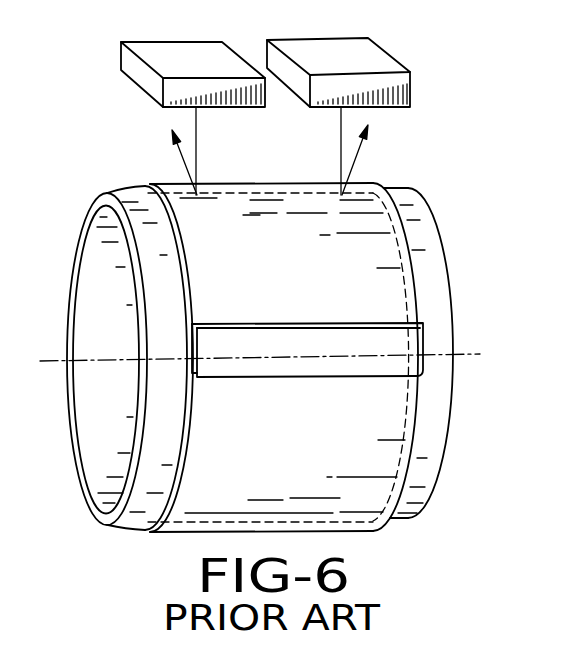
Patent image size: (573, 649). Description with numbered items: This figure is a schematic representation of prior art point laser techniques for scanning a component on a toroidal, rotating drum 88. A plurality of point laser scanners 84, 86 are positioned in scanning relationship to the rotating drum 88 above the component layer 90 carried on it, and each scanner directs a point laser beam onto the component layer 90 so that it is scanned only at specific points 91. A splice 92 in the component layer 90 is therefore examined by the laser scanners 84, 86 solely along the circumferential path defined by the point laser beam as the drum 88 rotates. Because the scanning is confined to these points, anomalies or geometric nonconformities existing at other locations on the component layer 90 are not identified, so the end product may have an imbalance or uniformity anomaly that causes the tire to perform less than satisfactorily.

The point laser scanner 84 is at (338, 43).
The point laser scanner 86 is at (155, 47).
The rotating drum 88 is at (420, 212).
The component layer 90 is at (392, 251).
The specific points 91 is at (197, 197).
The splice 92 is at (390, 352).